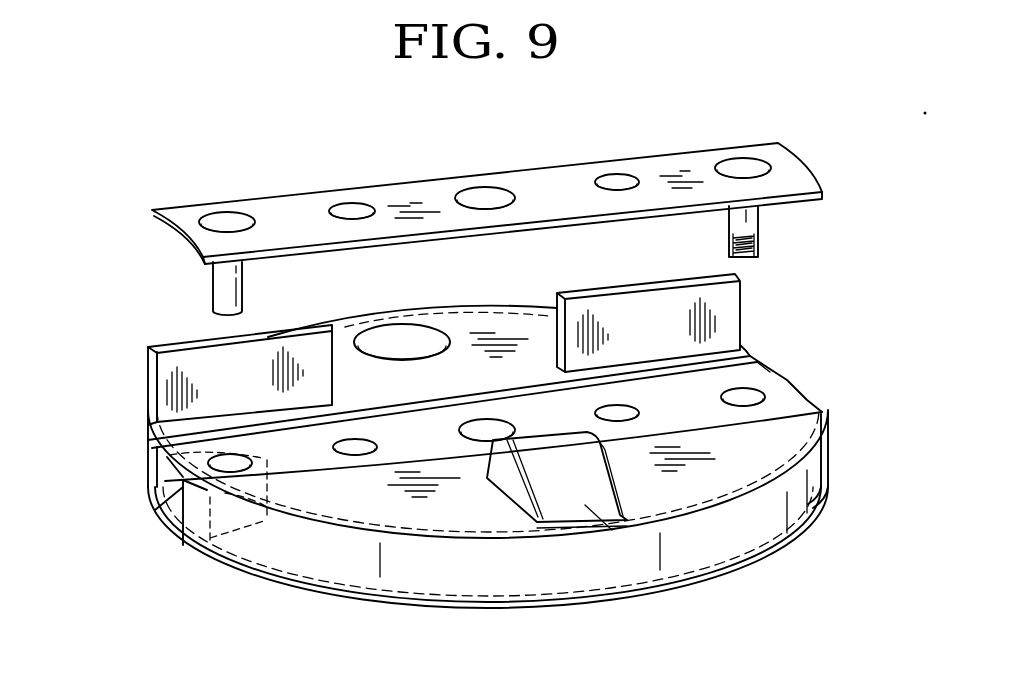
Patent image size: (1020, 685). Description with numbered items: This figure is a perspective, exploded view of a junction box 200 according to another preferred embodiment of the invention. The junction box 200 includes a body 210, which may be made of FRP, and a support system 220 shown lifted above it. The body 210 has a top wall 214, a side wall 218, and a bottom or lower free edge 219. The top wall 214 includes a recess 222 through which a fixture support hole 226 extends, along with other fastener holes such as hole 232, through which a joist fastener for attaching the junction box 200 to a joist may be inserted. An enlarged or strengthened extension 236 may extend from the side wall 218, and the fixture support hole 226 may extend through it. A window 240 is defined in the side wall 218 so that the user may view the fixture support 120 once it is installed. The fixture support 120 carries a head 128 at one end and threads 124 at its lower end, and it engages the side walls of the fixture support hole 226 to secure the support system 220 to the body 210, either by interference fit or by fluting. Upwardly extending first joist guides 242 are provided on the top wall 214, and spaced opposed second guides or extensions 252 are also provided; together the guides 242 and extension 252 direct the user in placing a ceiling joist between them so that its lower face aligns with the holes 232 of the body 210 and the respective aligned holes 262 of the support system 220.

The support system 220 is at (475, 221).
The holes of support system 262 is at (353, 205).
The head 128 is at (757, 168).
The fixture support 120 is at (740, 238).
The threads 124 is at (747, 262).
The first joist guides 242 is at (173, 360).
The junction box 200 is at (471, 472).
The recess 222 is at (737, 375).
The fixture support hole 226 is at (790, 383).
The top wall 214 is at (788, 436).
The body 210 is at (471, 507).
The side wall 218 is at (800, 500).
The window 240 is at (161, 542).
The extension 236 is at (262, 523).
The hole 232 is at (348, 442).
The lower free edge 219 is at (383, 610).
The second guides 252 is at (587, 503).